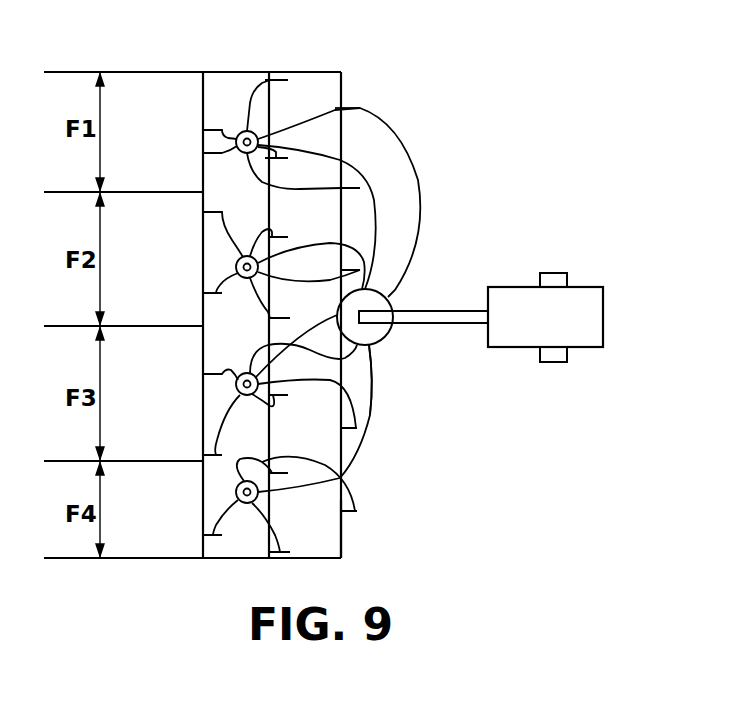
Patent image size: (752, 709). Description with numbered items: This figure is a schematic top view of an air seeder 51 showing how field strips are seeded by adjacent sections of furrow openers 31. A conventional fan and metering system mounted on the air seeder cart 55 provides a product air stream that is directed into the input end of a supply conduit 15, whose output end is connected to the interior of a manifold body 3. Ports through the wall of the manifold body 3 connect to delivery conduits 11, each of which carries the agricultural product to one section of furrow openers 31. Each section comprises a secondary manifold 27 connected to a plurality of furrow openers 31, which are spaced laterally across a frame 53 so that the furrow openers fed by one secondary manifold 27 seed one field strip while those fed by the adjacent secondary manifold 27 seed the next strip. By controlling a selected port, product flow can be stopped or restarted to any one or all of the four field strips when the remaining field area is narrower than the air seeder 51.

The air seeder 51 is at (341, 72).
The furrow openers 31 is at (352, 108).
The secondary manifold 27 is at (203, 152).
The manifold body 3 is at (385, 337).
The supply conduit 15 is at (445, 326).
The air seeder cart 55 is at (603, 318).
The delivery conduit 11 is at (372, 410).
The frame 53 is at (341, 552).